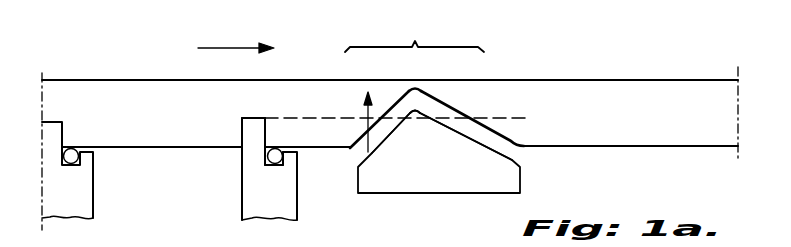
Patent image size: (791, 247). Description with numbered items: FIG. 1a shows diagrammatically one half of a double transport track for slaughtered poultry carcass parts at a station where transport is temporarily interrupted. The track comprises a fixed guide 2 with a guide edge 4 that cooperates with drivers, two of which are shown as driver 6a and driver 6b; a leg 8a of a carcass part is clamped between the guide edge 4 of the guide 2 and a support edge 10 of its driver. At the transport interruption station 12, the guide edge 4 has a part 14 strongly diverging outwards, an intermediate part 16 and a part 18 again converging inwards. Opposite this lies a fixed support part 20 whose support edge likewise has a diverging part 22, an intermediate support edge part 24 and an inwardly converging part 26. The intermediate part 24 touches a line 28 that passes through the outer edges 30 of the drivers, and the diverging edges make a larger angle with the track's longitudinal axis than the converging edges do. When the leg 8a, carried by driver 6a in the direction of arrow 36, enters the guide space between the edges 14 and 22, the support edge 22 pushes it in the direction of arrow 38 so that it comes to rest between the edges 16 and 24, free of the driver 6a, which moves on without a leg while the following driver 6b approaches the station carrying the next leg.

The fixed guide 2 is at (93, 93).
The guide edge 4 is at (160, 147).
The driver 6a is at (297, 200).
The driver 6b is at (93, 195).
The leg 8a is at (277, 150).
The support edge 10 is at (271, 163).
The transport interruption station 12 is at (440, 80).
The part strongly diverging outwards 14 is at (387, 108).
The intermediate part 16 is at (415, 88).
The part again converging inwards 18 is at (455, 108).
The fixed support part 20 is at (466, 152).
The support edge diverging outwards 22 is at (370, 157).
The intermediate support edge part 24 is at (418, 113).
The inwardly converging part 26 is at (493, 153).
The line 28 is at (512, 117).
The outer edge 30 is at (250, 118).
The arrow 36 is at (222, 46).
The arrow 38 is at (362, 132).